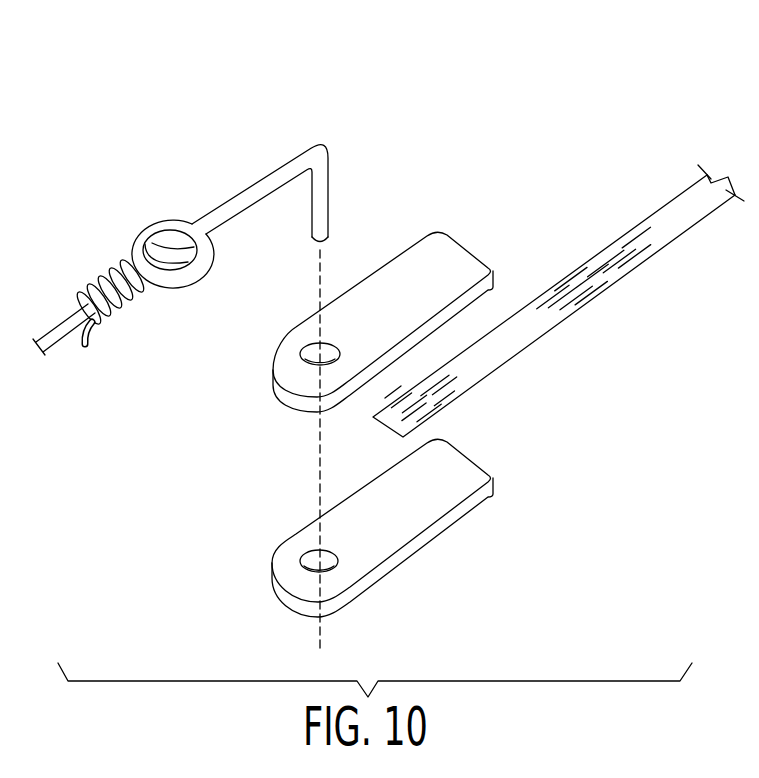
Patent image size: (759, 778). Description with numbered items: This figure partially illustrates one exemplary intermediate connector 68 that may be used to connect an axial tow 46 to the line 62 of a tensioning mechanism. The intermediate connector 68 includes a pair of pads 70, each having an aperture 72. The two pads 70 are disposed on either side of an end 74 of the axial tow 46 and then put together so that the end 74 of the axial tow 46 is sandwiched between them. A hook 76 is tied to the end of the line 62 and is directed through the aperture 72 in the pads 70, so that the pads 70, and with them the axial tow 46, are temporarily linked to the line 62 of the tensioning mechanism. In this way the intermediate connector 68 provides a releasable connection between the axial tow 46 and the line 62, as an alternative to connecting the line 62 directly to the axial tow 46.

The axial tow 46 is at (597, 293).
The line 62 is at (52, 337).
The intermediate connector 68 is at (468, 120).
The pad 70 is at (457, 260).
The aperture 72 is at (305, 366).
The end of the axial tow 74 is at (427, 403).
The hook 76 is at (322, 200).